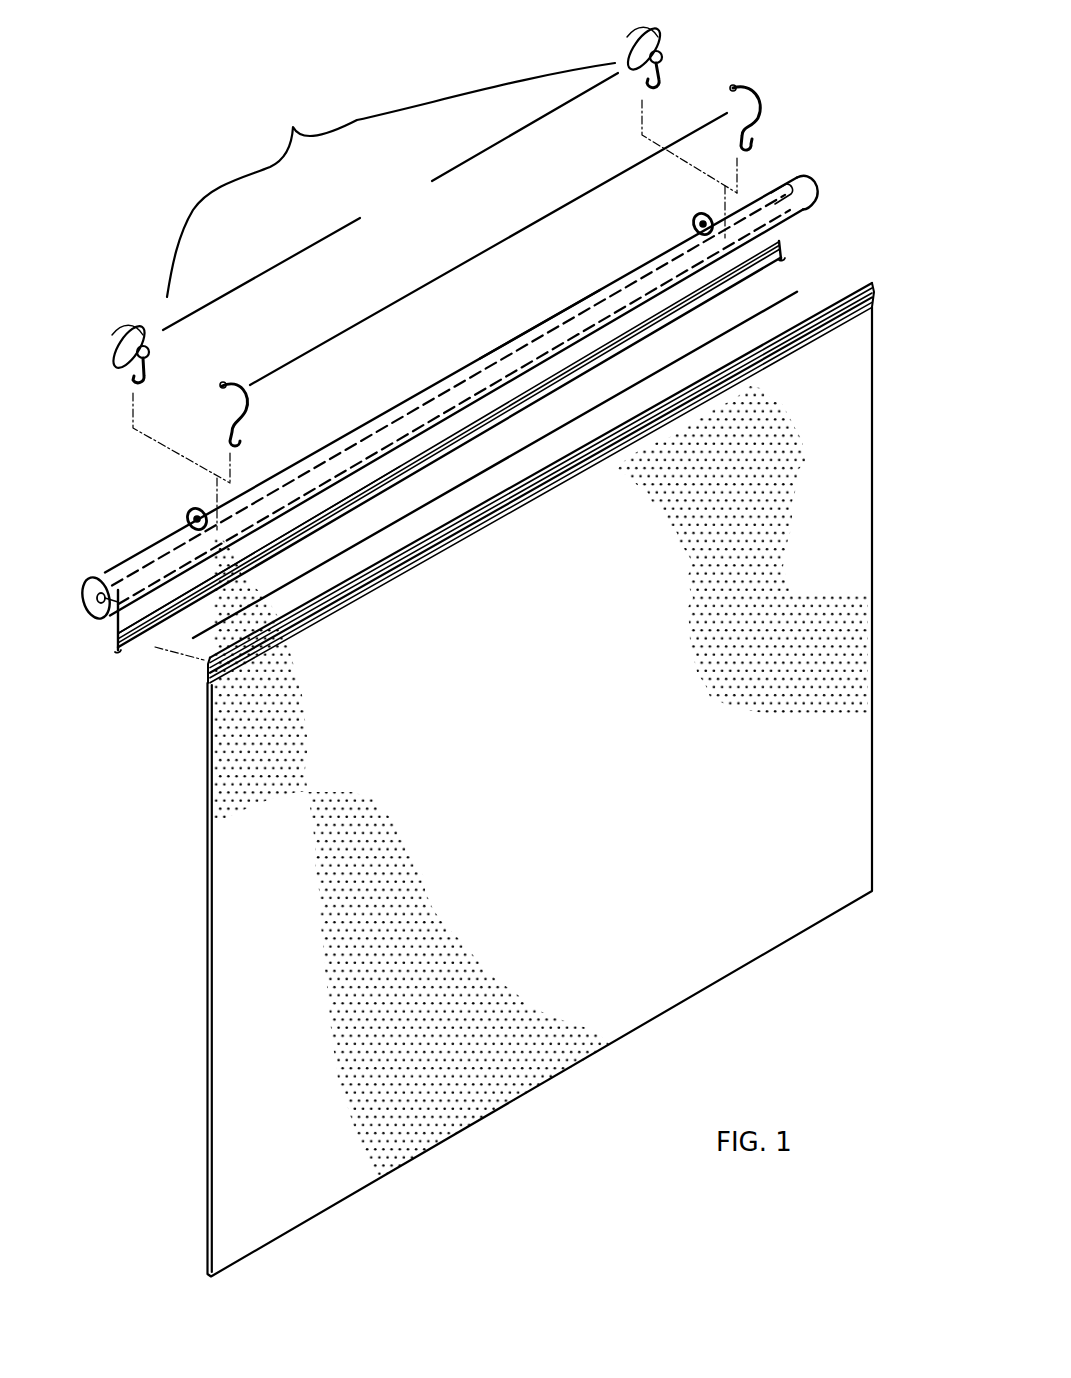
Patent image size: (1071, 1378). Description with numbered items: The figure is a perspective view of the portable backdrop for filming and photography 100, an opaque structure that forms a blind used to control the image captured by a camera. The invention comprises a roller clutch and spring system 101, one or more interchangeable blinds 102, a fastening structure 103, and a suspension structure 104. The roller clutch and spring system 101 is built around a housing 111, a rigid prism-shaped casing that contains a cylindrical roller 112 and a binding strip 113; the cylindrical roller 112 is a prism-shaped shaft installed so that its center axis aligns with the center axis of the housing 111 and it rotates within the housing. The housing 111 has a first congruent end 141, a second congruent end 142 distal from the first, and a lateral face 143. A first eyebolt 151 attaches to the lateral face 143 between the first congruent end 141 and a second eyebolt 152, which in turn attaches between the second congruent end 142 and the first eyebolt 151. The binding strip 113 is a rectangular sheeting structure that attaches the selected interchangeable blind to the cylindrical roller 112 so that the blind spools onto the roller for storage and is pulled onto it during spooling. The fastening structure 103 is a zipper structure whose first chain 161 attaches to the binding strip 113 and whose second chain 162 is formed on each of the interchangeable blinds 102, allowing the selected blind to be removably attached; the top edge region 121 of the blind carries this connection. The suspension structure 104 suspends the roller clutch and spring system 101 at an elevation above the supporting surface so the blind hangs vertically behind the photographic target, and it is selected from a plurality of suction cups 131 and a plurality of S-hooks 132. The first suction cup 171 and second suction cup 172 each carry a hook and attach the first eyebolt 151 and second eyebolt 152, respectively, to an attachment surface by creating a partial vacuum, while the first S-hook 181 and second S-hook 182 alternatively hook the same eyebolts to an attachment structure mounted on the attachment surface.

The portable backdrop for filming and photography 100 is at (150, 106).
The roller clutch and spring system 101 is at (815, 177).
The interchangeable blinds 102 is at (873, 577).
The fastening structure 103 is at (560, 431).
The suspension structure 104 is at (391, 180).
The housing 111 is at (523, 329).
The cylindrical roller 112 is at (412, 412).
The binding strip 113 is at (625, 333).
The top edge of sheet 121 is at (208, 683).
The plurality of suction cups 131 is at (390, 201).
The plurality of S-hooks 132 is at (488, 249).
The first congruent end 141 is at (95, 603).
The second congruent end 142 is at (815, 197).
The lateral face 143 is at (92, 580).
The first eyebolt 151 is at (190, 519).
The second eyebolt 152 is at (716, 211).
The first chain 161 is at (190, 597).
The second chain 162 is at (400, 581).
The first suction cup 171 is at (128, 325).
The second suction cup 172 is at (630, 44).
The first S-hook 181 is at (222, 384).
The second S-hook 182 is at (733, 87).